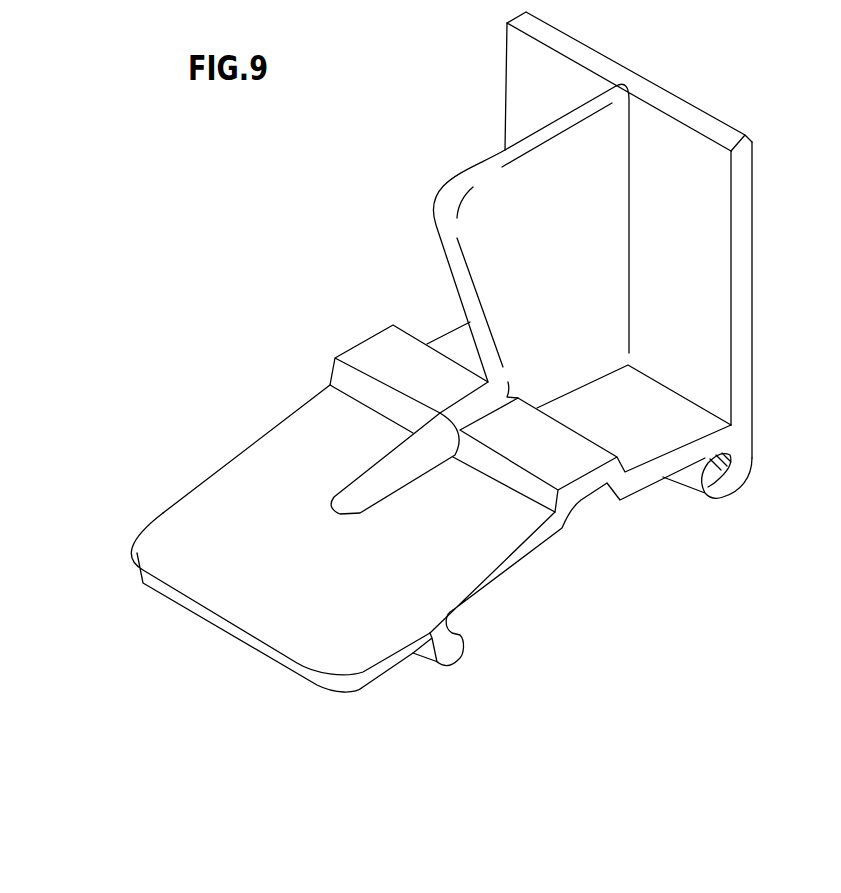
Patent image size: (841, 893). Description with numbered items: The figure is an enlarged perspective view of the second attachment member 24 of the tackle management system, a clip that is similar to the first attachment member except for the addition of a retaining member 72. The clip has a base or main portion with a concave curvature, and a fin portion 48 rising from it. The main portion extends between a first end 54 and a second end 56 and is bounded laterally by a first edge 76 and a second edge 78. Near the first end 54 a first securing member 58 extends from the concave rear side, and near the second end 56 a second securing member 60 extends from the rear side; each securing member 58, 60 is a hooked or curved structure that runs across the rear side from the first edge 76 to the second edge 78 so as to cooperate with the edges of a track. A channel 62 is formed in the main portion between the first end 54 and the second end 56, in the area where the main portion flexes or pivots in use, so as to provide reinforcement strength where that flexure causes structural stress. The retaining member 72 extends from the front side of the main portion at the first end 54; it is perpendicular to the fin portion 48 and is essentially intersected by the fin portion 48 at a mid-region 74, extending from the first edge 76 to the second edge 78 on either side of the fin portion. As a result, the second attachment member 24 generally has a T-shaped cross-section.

The second attachment member 24 is at (345, 268).
The fin portion 48 is at (538, 177).
The first end 54 is at (747, 420).
The second end 56 is at (315, 632).
The first securing member 58 is at (723, 483).
The second securing member 60 is at (450, 650).
The channel 62 is at (528, 435).
The retaining member 72 is at (692, 150).
The mid-region 74 is at (627, 80).
The first edge 76 is at (268, 427).
The second edge 78 is at (542, 533).